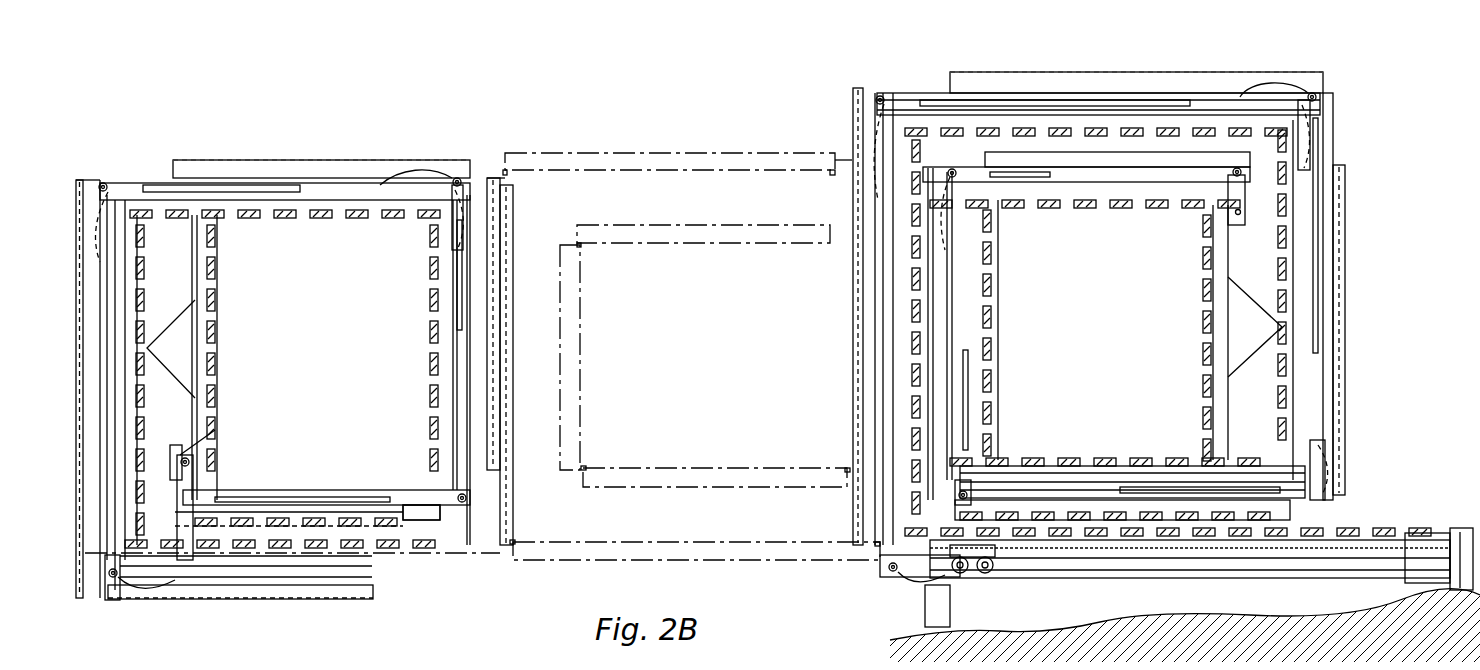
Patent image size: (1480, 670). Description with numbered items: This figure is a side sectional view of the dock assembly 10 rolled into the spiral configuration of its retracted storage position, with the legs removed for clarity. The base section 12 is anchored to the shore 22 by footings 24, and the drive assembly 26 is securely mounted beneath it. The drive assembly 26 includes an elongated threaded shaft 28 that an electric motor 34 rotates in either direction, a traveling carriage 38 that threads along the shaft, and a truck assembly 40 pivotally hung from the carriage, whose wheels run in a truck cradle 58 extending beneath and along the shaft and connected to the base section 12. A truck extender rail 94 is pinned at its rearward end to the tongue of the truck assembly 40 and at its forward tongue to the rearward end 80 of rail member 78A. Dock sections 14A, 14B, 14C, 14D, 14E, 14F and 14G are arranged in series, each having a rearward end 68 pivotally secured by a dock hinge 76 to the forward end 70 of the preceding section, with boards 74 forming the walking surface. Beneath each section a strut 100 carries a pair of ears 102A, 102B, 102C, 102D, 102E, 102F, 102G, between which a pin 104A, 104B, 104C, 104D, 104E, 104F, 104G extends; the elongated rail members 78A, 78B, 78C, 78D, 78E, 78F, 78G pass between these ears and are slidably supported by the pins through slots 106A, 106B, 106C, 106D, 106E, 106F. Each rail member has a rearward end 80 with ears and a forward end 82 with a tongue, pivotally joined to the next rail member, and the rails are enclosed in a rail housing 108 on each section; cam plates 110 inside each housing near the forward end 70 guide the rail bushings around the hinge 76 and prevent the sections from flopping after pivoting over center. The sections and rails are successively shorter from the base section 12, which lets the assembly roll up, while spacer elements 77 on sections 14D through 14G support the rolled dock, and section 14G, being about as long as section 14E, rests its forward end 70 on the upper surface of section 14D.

The dock assembly 10 is at (622, 135).
The base section 12 is at (1400, 530).
The dock section 14A is at (855, 322).
The dock section 14B is at (310, 605).
The dock section 14C is at (148, 350).
The dock section 14D is at (330, 228).
The dock section 14E is at (425, 325).
The dock section 14F is at (275, 440).
The dock section 14G is at (205, 395).
The shore 22 is at (1125, 618).
The footings 24 is at (925, 625).
The drive assembly 26 is at (1030, 575).
The threaded shaft 28 is at (1210, 572).
The electric motor 34 is at (1430, 578).
The traveling carriage 38 is at (1068, 580).
The truck assembly 40 is at (980, 575).
The truck cradle 58 is at (1295, 578).
The rearward end 68 is at (512, 160).
The forward end 70 is at (495, 190).
The boards 74 is at (428, 380).
The dock hinge 76 is at (430, 238).
The spacer elements 77 is at (185, 342).
The rail member 78A is at (855, 370).
The rail member 78B is at (240, 580).
The rail member 78C is at (112, 286).
The rail member 78D is at (345, 185).
The rail member 78E is at (472, 375).
The rail member 78F is at (425, 510).
The rail member 78G is at (188, 470).
The rearward end 80 is at (108, 195).
The forward end 82 is at (462, 176).
The truck extender rail 94 is at (922, 595).
The strut 100 is at (282, 230).
The ears 102A is at (855, 557).
The ears 102B is at (912, 95).
The ears 102C is at (82, 600).
The ears 102D is at (148, 178).
The ears 102E is at (392, 228).
The ears 102F is at (410, 460).
The ears 102G is at (1230, 215).
The pin 104A is at (868, 525).
The pin 104B is at (930, 92).
The pin 104C is at (1320, 130).
The pin 104D is at (148, 175).
The pin 104E is at (470, 165).
The pin 104F is at (430, 520).
The pin 104G is at (180, 460).
The slot 106A is at (855, 392).
The slot 106B is at (370, 600).
The slot 106C is at (1363, 323).
The slot 106D is at (305, 178).
The slot 106E is at (455, 310).
The slot 106F is at (320, 515).
The rail housing 108 is at (255, 580).
The cam plates 110 is at (420, 165).